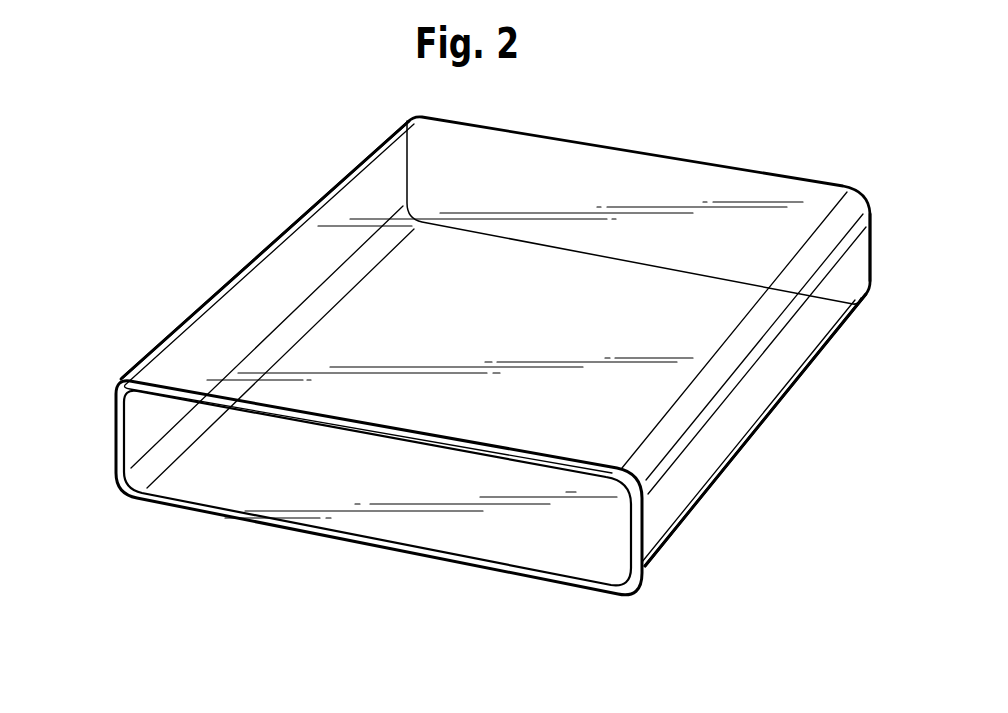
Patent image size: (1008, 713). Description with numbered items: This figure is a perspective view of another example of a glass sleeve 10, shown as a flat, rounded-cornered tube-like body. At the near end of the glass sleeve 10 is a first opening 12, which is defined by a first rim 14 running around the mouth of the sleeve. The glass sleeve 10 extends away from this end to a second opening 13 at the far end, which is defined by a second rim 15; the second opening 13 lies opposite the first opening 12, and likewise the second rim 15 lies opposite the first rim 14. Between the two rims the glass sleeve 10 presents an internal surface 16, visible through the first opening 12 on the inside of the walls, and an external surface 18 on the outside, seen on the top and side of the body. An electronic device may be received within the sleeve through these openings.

The glass sleeve 10 is at (752, 136).
The first opening 12 is at (262, 484).
The second opening 13 is at (584, 160).
The first rim 14 is at (116, 413).
The second rim 15 is at (388, 160).
The internal surface 16 is at (138, 427).
The external surface 18 is at (740, 412).